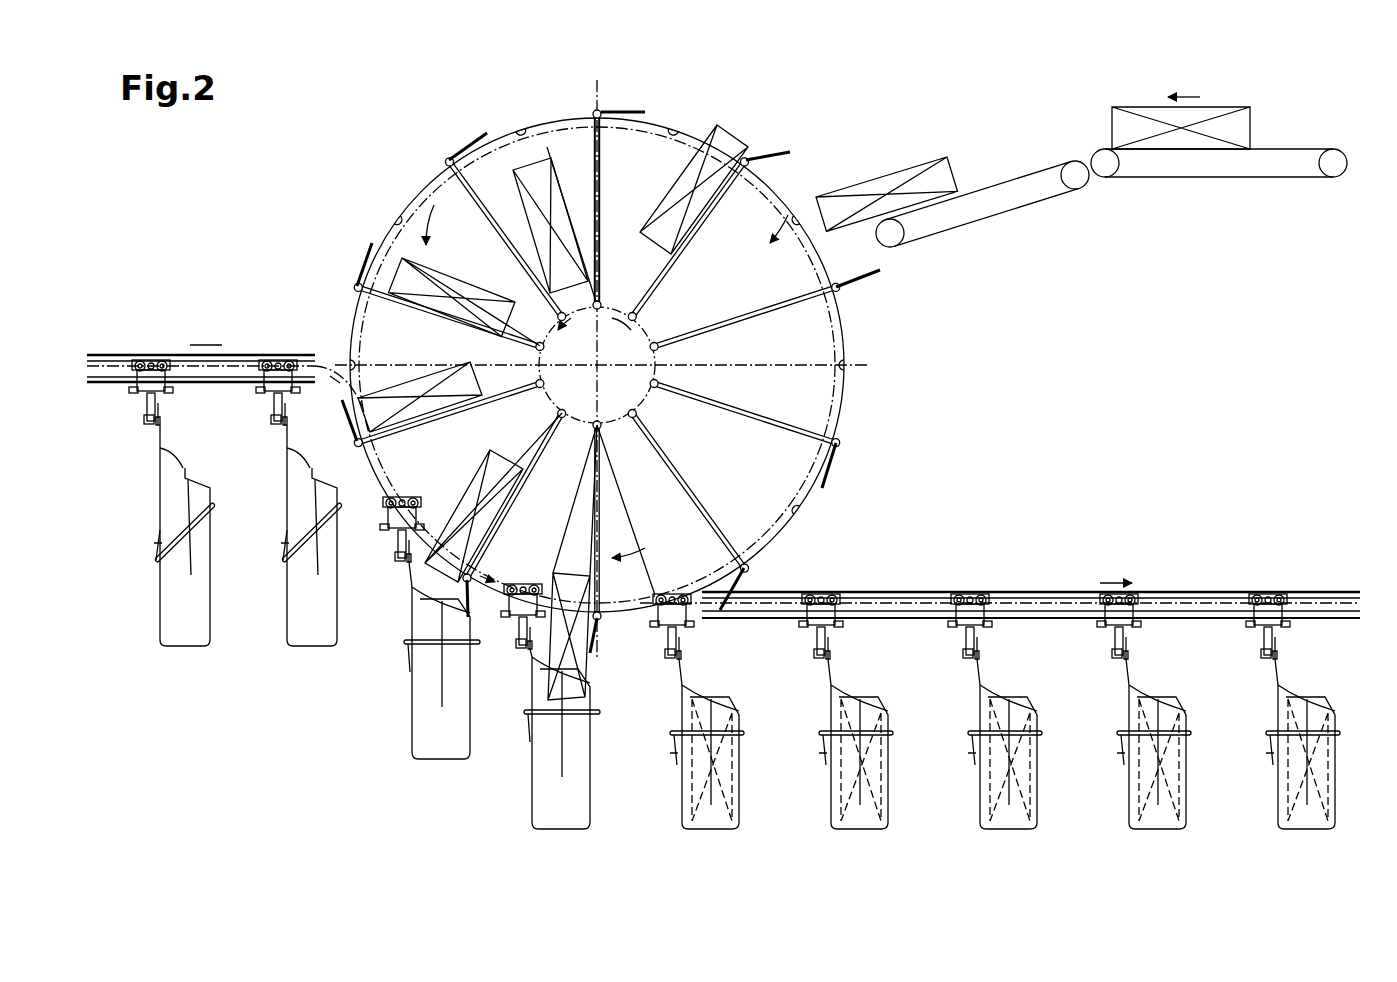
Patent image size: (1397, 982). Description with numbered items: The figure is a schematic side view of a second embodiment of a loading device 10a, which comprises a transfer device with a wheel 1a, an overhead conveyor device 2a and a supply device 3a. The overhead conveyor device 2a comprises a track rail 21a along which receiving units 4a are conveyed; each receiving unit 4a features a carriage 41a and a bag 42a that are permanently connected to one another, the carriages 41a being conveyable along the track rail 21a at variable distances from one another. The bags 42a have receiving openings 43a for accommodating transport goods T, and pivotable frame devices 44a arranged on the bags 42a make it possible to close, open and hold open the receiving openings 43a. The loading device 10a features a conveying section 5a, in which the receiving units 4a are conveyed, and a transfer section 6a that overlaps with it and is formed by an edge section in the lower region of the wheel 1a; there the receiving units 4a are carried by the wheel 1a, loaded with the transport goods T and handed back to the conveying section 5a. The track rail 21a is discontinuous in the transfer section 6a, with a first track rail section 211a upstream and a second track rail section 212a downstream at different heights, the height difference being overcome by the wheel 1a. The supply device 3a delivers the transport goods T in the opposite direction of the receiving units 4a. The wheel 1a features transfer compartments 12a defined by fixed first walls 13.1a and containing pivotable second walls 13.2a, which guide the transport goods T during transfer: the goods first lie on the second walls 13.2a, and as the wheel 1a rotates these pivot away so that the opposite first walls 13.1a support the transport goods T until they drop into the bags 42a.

The wheel 1a is at (727, 100).
The overhead conveyor device 2a is at (147, 262).
The supply device 3a is at (1136, 212).
The receiving unit 4a is at (150, 490).
The conveying section 5a is at (115, 367).
The transfer section 6a is at (490, 592).
The loading device 10a is at (840, 98).
The transfer compartment 12a is at (824, 336).
The first wall 13.1a is at (593, 140).
The second wall 13.2a is at (548, 145).
The track rail 21a is at (118, 380).
The carriage 41a is at (148, 380).
The bag 42a is at (183, 620).
The receiving opening 43a is at (193, 466).
The pivotable frame device 44a is at (158, 558).
The first track rail section 211a is at (192, 363).
The second track rail section 212a is at (1025, 597).
The transport goods T is at (889, 178).